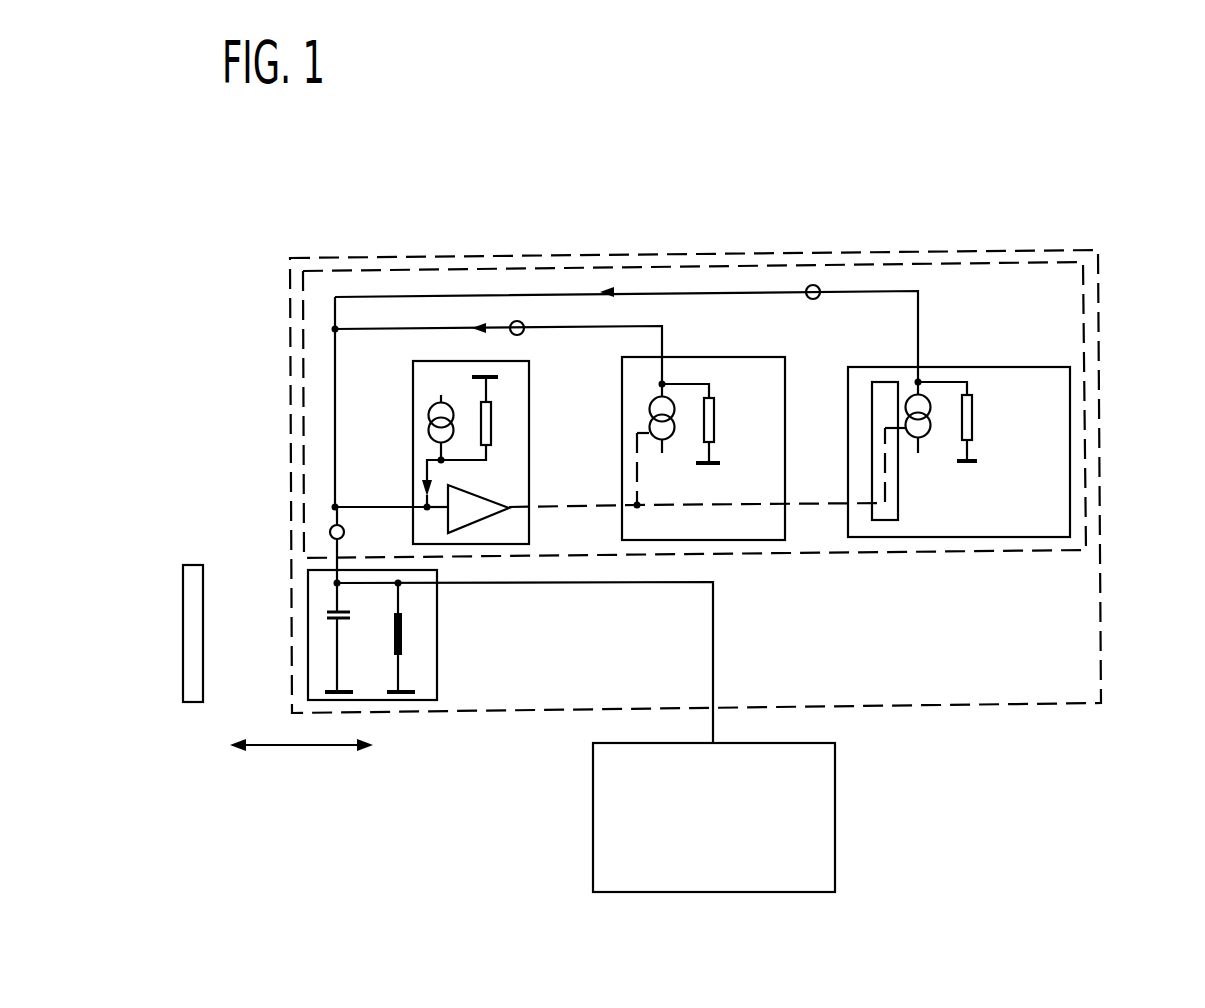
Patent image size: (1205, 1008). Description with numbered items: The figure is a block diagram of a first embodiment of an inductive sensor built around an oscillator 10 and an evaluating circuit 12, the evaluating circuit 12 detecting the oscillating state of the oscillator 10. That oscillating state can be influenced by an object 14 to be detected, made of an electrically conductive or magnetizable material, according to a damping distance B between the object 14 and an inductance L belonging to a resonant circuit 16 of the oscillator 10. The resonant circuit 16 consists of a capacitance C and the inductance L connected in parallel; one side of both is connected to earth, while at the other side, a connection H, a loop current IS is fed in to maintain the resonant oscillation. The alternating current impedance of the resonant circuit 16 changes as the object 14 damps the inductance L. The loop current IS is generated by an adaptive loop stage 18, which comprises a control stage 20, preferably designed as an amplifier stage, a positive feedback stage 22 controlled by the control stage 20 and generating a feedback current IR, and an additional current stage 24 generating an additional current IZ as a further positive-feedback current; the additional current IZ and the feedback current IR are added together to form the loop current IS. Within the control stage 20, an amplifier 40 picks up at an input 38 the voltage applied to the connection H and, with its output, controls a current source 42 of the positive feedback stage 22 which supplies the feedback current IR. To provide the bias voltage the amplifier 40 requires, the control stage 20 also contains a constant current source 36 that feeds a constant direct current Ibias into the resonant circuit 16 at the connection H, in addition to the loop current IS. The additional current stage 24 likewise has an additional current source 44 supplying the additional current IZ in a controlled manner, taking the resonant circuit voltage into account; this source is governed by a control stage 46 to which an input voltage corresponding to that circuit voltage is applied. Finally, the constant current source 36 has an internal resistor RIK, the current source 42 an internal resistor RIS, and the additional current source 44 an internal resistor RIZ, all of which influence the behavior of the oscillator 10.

The oscillator 10 is at (695, 414).
The evaluating circuit 12 is at (799, 817).
The object 14 is at (190, 642).
The resonant circuit 16 is at (391, 687).
The adaptive loop stage 18 is at (1022, 283).
The control stage 20 is at (469, 435).
The positive feedback stage 22 is at (676, 368).
The additional current stage 24 is at (1022, 482).
The constant current source 36 is at (429, 413).
The input 38 is at (442, 512).
The amplifier 40 is at (487, 510).
The current source 42 is at (649, 408).
The additional current source 44 is at (931, 410).
The control stage 46 is at (882, 513).
The feedback current IR is at (518, 321).
The additional current IZ is at (819, 289).
The loop current IS is at (330, 530).
The connection H is at (330, 587).
The capacitance C is at (346, 652).
The inductance L is at (405, 637).
The damping distance B is at (301, 760).
The internal resistor RIK is at (491, 420).
The internal resistor RIS is at (714, 428).
The internal resistor RIZ is at (972, 428).
The constant direct current Ibias is at (374, 479).